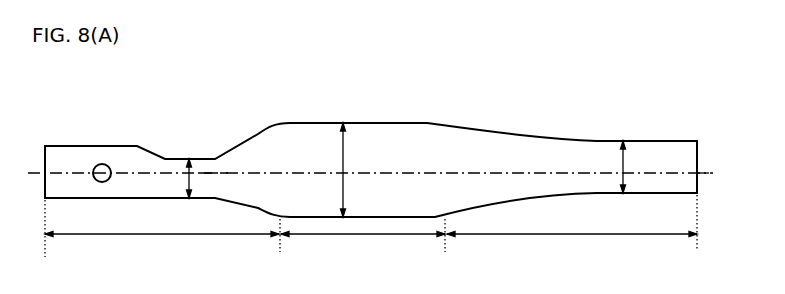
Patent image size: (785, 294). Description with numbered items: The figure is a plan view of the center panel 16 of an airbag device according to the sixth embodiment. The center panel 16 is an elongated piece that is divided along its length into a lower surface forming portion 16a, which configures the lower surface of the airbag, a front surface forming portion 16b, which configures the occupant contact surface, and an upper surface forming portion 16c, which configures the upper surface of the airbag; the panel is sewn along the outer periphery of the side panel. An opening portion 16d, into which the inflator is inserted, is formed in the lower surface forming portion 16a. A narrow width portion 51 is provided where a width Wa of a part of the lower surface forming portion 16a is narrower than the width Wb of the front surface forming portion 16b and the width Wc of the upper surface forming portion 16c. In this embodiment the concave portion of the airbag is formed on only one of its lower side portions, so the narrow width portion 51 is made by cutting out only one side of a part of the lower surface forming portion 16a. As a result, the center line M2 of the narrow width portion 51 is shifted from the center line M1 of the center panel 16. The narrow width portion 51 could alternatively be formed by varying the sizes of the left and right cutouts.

The center panel 16 is at (484, 158).
The lower surface forming portion 16a is at (162, 231).
The front surface forming portion 16b is at (363, 241).
The upper surface forming portion 16c is at (572, 229).
The opening portion 16d is at (93, 164).
The narrow width portion 51 is at (173, 158).
The width of the lower surface forming portion Wa is at (174, 178).
The width of the front surface forming portion Wb is at (360, 170).
The width of the upper surface forming portion Wc is at (642, 167).
The center line of the center panel M1 is at (718, 170).
The center line of the narrow width portion M2 is at (225, 182).